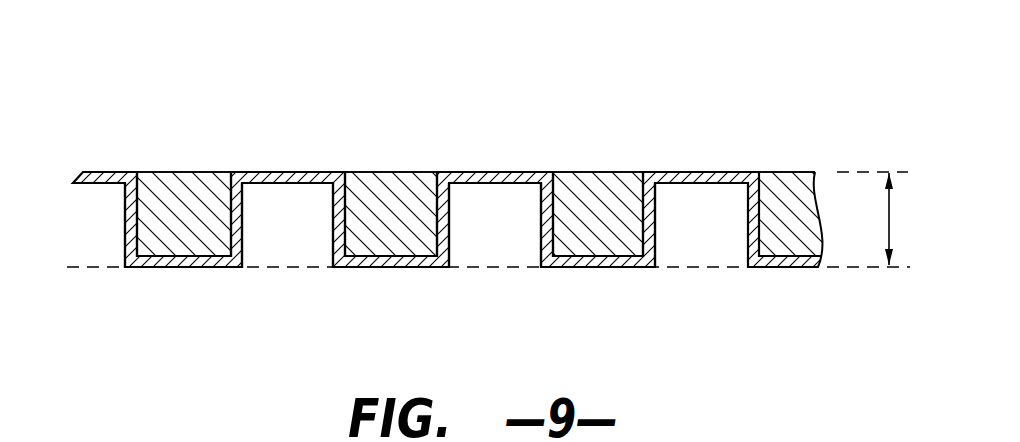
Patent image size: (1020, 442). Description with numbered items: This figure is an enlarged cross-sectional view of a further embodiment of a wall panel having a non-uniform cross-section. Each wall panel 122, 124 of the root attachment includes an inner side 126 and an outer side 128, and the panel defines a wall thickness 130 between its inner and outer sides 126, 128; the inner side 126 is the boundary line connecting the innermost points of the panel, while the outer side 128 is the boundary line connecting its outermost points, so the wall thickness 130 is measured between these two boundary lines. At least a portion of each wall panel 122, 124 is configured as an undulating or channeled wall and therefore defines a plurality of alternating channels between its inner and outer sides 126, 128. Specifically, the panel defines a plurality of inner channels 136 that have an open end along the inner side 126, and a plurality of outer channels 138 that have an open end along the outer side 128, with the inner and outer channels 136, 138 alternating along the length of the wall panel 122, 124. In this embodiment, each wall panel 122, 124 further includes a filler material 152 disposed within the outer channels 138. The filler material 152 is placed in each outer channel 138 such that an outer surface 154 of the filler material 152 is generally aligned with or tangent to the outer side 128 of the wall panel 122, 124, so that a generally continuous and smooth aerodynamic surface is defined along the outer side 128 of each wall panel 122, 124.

The wall panel 122 is at (483, 183).
The wall panel 124 is at (483, 183).
The inner side 126 is at (273, 262).
The outer side 128 is at (293, 173).
The wall thickness 130 is at (893, 227).
The inner channels 136 is at (300, 243).
The outer channels 138 is at (227, 203).
The filler material 152 is at (793, 193).
The outer surface 154 is at (166, 174).